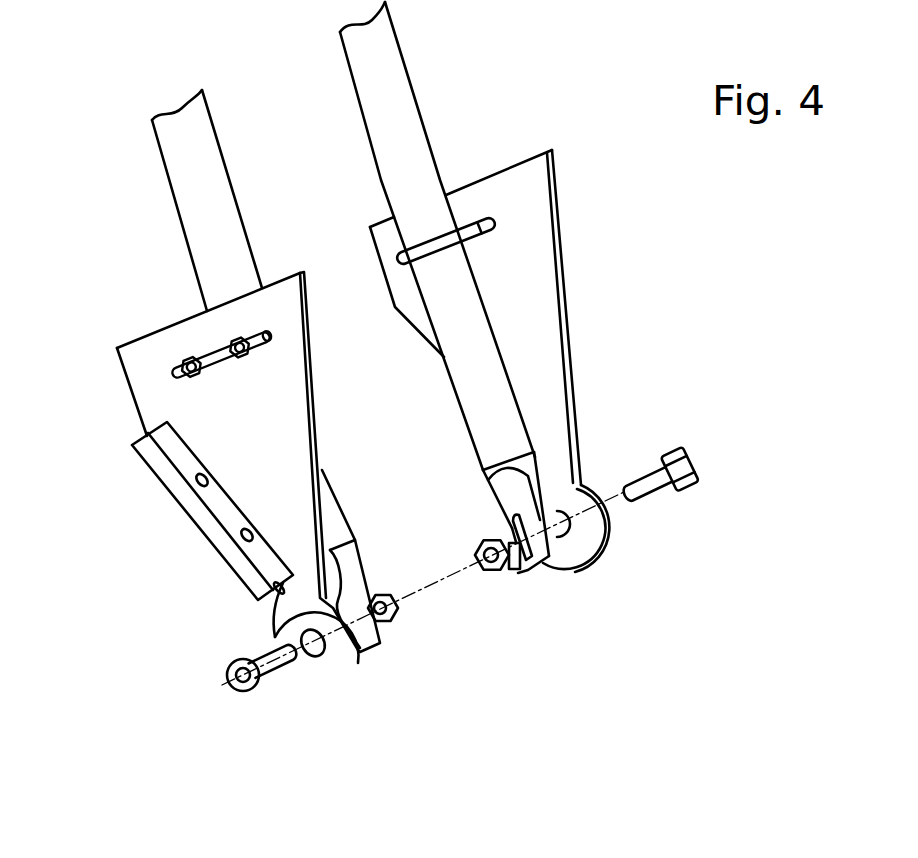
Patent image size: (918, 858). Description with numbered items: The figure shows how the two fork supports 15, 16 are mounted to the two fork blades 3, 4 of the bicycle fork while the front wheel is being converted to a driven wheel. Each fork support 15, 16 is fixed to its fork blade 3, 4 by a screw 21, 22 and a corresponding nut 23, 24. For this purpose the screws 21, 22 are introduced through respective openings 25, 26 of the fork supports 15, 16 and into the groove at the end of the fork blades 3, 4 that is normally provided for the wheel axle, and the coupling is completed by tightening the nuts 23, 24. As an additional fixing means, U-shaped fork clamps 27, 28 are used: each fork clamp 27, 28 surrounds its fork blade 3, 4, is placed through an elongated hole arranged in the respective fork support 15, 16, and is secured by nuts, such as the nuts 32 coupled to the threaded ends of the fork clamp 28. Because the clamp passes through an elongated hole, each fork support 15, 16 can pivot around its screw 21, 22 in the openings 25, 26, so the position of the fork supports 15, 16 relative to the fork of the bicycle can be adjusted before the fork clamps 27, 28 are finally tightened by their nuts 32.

The fork blade 3 is at (382, 80).
The fork blade 4 is at (193, 193).
The fork support 15 is at (513, 277).
The fork support 16 is at (155, 380).
The screw 21 is at (670, 487).
The screw 22 is at (240, 663).
The nut 23 is at (503, 573).
The nut 24 is at (395, 623).
The opening 25 is at (578, 543).
The opening 26 is at (323, 657).
The fork clamp 27 is at (430, 248).
The fork clamp 28 is at (264, 328).
The nut 32 is at (232, 330).